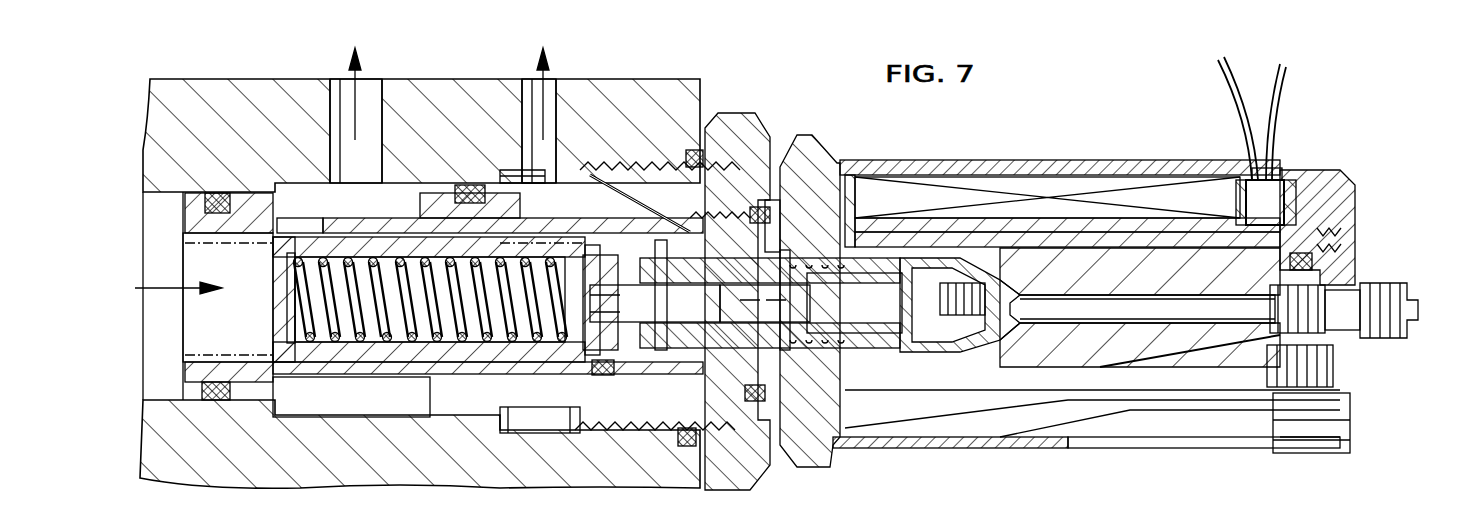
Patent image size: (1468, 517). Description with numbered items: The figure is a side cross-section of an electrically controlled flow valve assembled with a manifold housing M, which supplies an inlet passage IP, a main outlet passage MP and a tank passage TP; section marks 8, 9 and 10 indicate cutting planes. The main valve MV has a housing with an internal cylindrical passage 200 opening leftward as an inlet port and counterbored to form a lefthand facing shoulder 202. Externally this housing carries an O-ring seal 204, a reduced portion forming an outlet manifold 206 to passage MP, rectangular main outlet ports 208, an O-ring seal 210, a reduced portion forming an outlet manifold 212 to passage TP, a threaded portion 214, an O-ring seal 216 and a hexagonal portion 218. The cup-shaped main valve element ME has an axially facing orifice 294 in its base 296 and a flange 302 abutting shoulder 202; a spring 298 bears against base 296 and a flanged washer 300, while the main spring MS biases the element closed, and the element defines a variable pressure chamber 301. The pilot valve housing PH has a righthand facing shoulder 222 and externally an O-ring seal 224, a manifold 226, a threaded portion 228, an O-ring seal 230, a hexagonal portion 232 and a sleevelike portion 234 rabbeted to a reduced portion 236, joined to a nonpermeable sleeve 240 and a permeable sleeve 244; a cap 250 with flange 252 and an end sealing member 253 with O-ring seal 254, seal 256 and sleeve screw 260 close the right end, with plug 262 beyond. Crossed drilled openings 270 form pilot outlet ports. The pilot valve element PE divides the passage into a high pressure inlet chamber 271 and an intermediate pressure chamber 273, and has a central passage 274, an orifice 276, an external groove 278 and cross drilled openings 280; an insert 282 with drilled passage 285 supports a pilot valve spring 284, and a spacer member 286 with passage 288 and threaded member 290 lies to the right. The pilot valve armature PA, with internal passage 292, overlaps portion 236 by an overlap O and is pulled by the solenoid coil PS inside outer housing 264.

The manifold housing M is at (232, 105).
The main outlet passage MP is at (365, 98).
The tank passage TP is at (550, 98).
The section line 9 is at (185, 192).
The section line 8 is at (303, 210).
The section line 10 is at (810, 110).
The inlet passage IP is at (165, 388).
The lefthand facing shoulder 202 is at (505, 225).
The outlet manifold 206 is at (437, 200).
The O-ring seal 204 is at (212, 393).
The main outlet ports 208 is at (305, 222).
The internal cylindrical passage 200 is at (198, 350).
The main spring MS is at (337, 352).
The main valve element ME is at (385, 372).
The main valve MV is at (427, 340).
The spring 298 is at (330, 283).
The axially facing orifice 294 is at (287, 298).
The base 296 is at (287, 320).
The outlet manifold 212 is at (520, 172).
The threaded portion 214 is at (578, 145).
The O-ring seal 216 is at (690, 150).
The O-ring seal 210 is at (590, 170).
The manifold 226 is at (658, 215).
The threaded portion 228 is at (730, 203).
The hexagonal portion of larger diameter 218 is at (730, 126).
The hexagonal portion of larger diameter 232 is at (820, 158).
The O-ring seal 230 is at (770, 208).
The nonpermeable sleeve 240 is at (985, 235).
The sleevelike portion 234 is at (868, 230).
The permeable sleeve 244 is at (1075, 240).
The portion of reduced diameter 236 is at (905, 230).
The O-ring seal 254 is at (1298, 257).
The end cap 250 is at (1340, 225).
The flange 252 is at (1345, 236).
The seal 256 is at (1350, 265).
The sleeve screw 260 is at (1265, 300).
The internal passage 292 is at (1128, 305).
The spacer member 286 is at (1005, 325).
The axial extending passage 288 is at (940, 338).
The drilled passage 285 is at (900, 240).
The threaded member 290 is at (950, 295).
The axially facing orifice 276 is at (632, 302).
The cross drilled openings 280 is at (710, 278).
The righthand facing shoulder 222 is at (813, 350).
The insert 282 is at (877, 350).
The pilot valve spring 284 is at (840, 247).
The external groove 278 is at (800, 253).
The crossed drilled openings 270 is at (705, 250).
The central passage 274 is at (667, 320).
The flanged washer 300 is at (580, 320).
The variable pressure chamber 301 is at (522, 235).
The flange 302 is at (507, 243).
The high pressure inlet chamber 271 is at (582, 385).
The O-ring seal 224 is at (603, 377).
The intermediate pressure chamber 273 is at (696, 437).
The pilot valve element PE is at (688, 359).
The pilot valve housing PH is at (806, 445).
The outer housing 264 is at (885, 448).
The pilot valve armature PA is at (1014, 370).
The solenoid coil PS is at (1032, 435).
The overlap O is at (916, 425).
The adjusting screw 262 is at (1405, 332).
The end sealing member 253 is at (1348, 355).